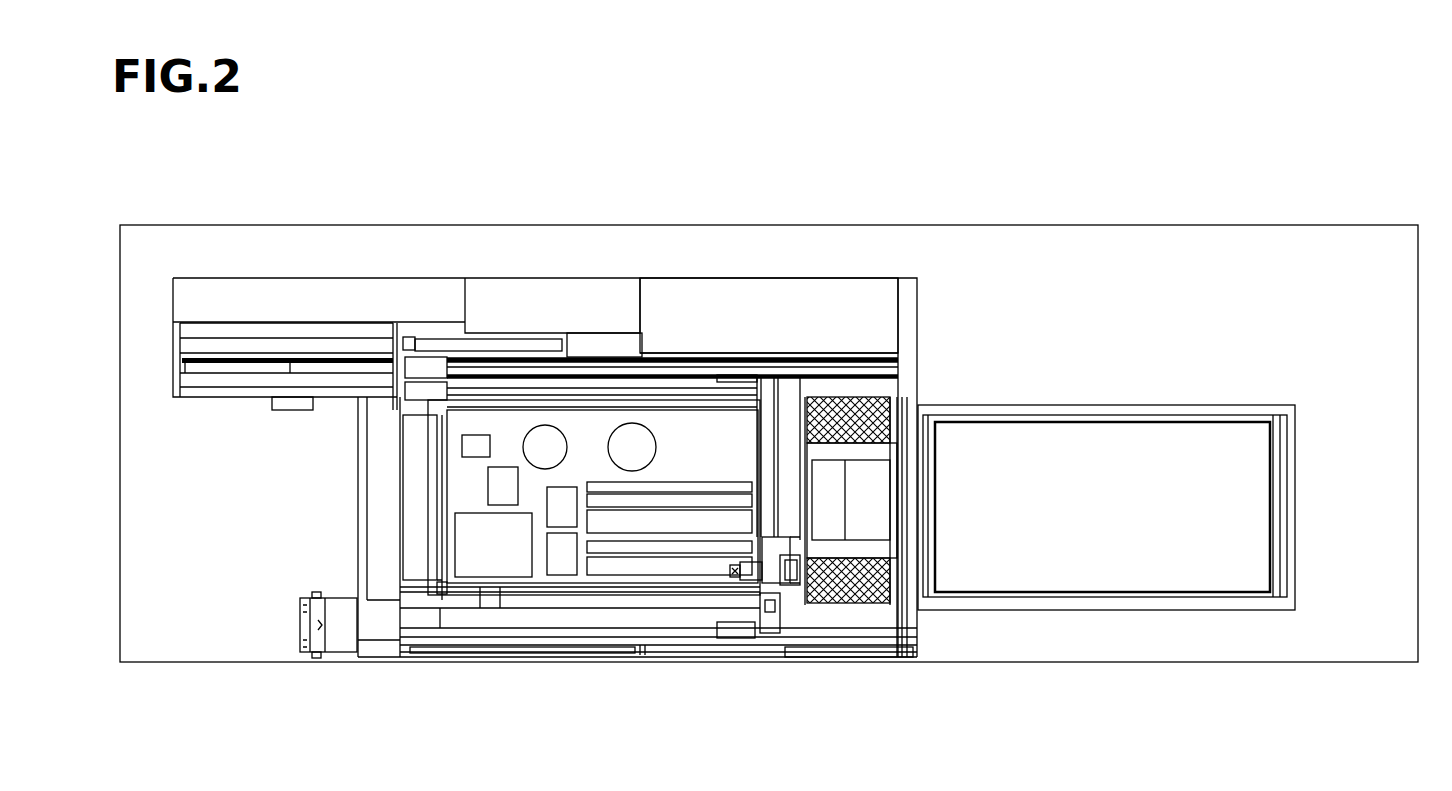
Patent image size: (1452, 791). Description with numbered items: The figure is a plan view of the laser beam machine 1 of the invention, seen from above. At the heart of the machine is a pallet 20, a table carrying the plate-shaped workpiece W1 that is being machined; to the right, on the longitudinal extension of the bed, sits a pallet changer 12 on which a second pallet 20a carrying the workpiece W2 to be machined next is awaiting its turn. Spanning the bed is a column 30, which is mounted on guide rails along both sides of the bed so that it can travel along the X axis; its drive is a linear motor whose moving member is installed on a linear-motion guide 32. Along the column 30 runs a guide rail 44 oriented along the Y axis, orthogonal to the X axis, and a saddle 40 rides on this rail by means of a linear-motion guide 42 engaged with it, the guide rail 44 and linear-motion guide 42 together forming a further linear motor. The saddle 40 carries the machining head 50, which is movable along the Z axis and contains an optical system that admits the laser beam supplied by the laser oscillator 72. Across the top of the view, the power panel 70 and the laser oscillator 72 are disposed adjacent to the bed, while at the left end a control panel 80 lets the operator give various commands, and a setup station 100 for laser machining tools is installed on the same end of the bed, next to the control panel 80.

The laser beam machine 1 is at (945, 207).
The pallet changer 12 is at (1090, 600).
The pallet 20 is at (540, 575).
The pallet 20a is at (1210, 580).
The column 30 is at (772, 637).
The linear-motion guide 32 is at (733, 638).
The saddle 40 is at (820, 600).
The linear-motion guide 42 is at (785, 585).
The guide rail 44 is at (768, 397).
The machining head 50 is at (727, 571).
The power panel 70 is at (380, 297).
The laser oscillator 72 is at (833, 292).
The control panel 80 is at (335, 645).
The setup station 100 is at (413, 478).
The workpiece W1 is at (690, 442).
The workpiece W2 is at (1091, 445).